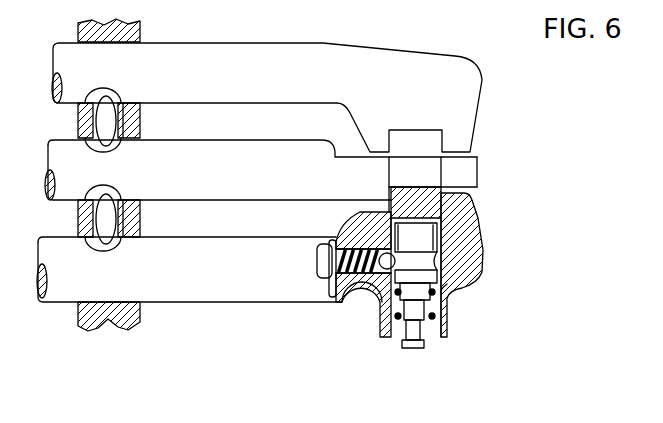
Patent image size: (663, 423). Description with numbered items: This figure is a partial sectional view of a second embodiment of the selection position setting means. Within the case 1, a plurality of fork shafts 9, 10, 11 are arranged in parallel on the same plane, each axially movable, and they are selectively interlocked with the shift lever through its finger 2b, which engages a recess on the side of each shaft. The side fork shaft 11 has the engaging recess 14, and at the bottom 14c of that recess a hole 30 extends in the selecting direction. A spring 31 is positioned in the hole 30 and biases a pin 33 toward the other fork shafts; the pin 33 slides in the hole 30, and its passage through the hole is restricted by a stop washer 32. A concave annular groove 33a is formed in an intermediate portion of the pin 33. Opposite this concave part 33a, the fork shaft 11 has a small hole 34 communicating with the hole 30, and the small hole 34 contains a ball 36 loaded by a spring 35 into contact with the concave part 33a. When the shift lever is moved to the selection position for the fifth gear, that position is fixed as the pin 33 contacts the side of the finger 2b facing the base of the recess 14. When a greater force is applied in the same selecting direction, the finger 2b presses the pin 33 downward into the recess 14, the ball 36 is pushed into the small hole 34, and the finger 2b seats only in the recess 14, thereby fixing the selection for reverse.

The case 1 is at (143, 30).
The fork shaft 9 is at (241, 43).
The center fork shaft 10 is at (256, 140).
The fork shaft 11 is at (204, 240).
The finger 2b is at (389, 198).
The recess 14 is at (407, 265).
The bottom of the engaging recess 14c is at (441, 228).
The hole 30 is at (440, 262).
The spring 31 is at (384, 322).
The stop washer 32 is at (402, 343).
The pin 33 is at (437, 311).
The concave annular groove 33a is at (448, 287).
The small hole 34 is at (318, 257).
The spring 35 is at (338, 283).
The ball 36 is at (361, 233).